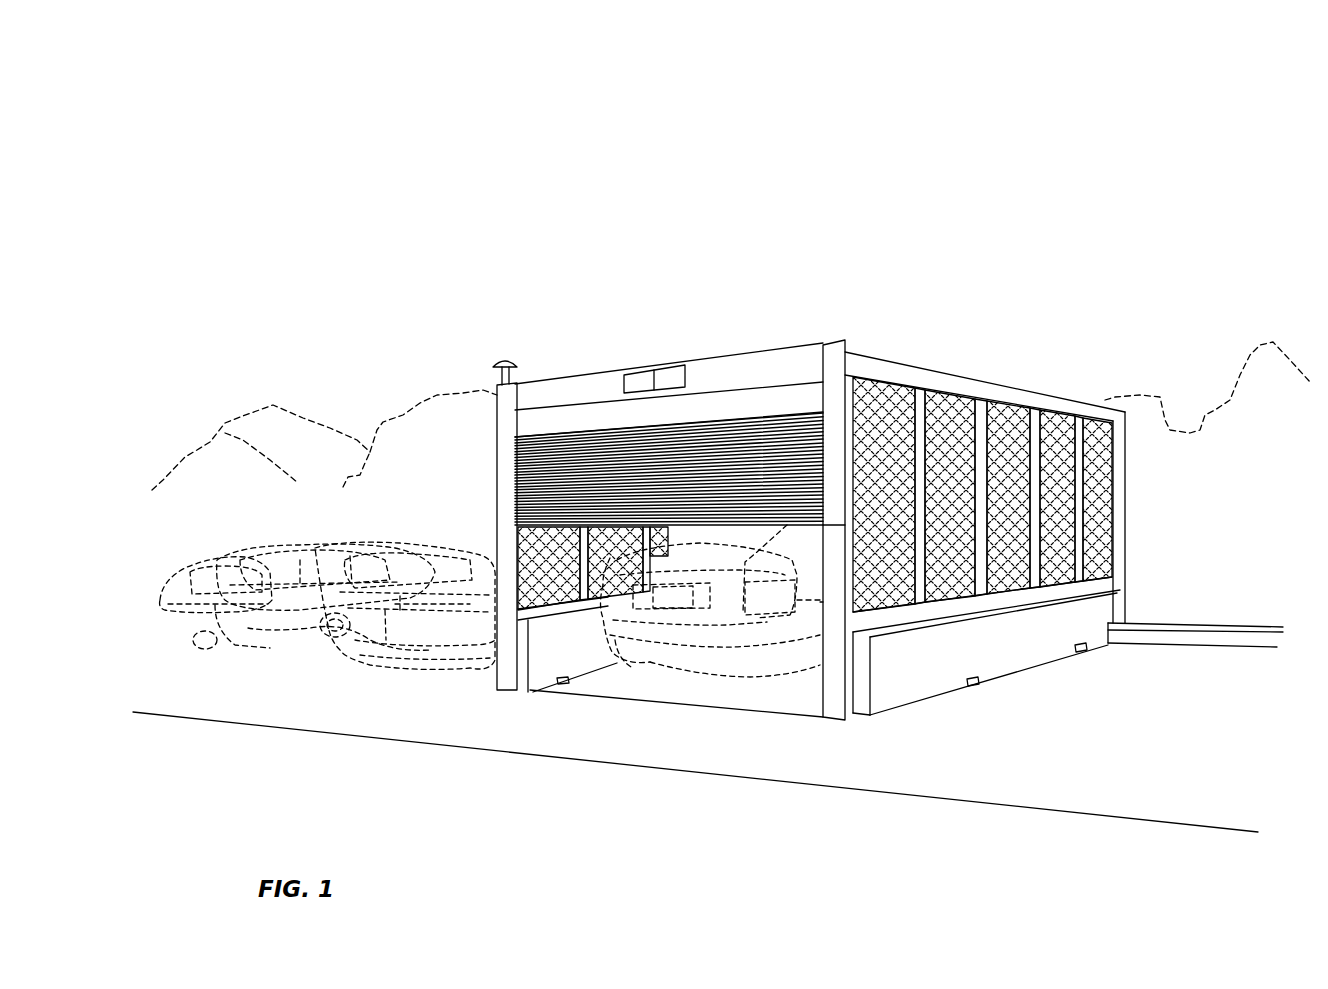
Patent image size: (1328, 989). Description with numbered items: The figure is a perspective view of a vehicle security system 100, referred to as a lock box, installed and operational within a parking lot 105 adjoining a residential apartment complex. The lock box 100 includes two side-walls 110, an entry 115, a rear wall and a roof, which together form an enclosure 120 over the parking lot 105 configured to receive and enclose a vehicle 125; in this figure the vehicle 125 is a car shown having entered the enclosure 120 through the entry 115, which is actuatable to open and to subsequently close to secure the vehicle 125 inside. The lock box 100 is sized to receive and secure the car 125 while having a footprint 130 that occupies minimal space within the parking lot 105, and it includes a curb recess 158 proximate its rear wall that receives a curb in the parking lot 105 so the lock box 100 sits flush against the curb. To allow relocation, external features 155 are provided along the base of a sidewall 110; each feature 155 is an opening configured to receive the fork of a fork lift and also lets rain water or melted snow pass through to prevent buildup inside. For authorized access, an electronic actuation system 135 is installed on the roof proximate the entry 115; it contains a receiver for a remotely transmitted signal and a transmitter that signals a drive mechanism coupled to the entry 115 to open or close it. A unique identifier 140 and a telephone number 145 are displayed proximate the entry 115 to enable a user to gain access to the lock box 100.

The vehicle security system 100 is at (316, 158).
The parking lot 105 is at (646, 806).
The side-walls 110 is at (564, 573).
The entry 115 is at (673, 492).
The enclosure 120 is at (600, 686).
The vehicle 125 is at (777, 640).
The footprint 130 is at (888, 716).
The electronic actuation system 135 is at (507, 357).
The unique identifier 140 is at (660, 363).
The telephone number 145 is at (678, 366).
The external features 155 is at (973, 688).
The curb recess 158 is at (1108, 652).